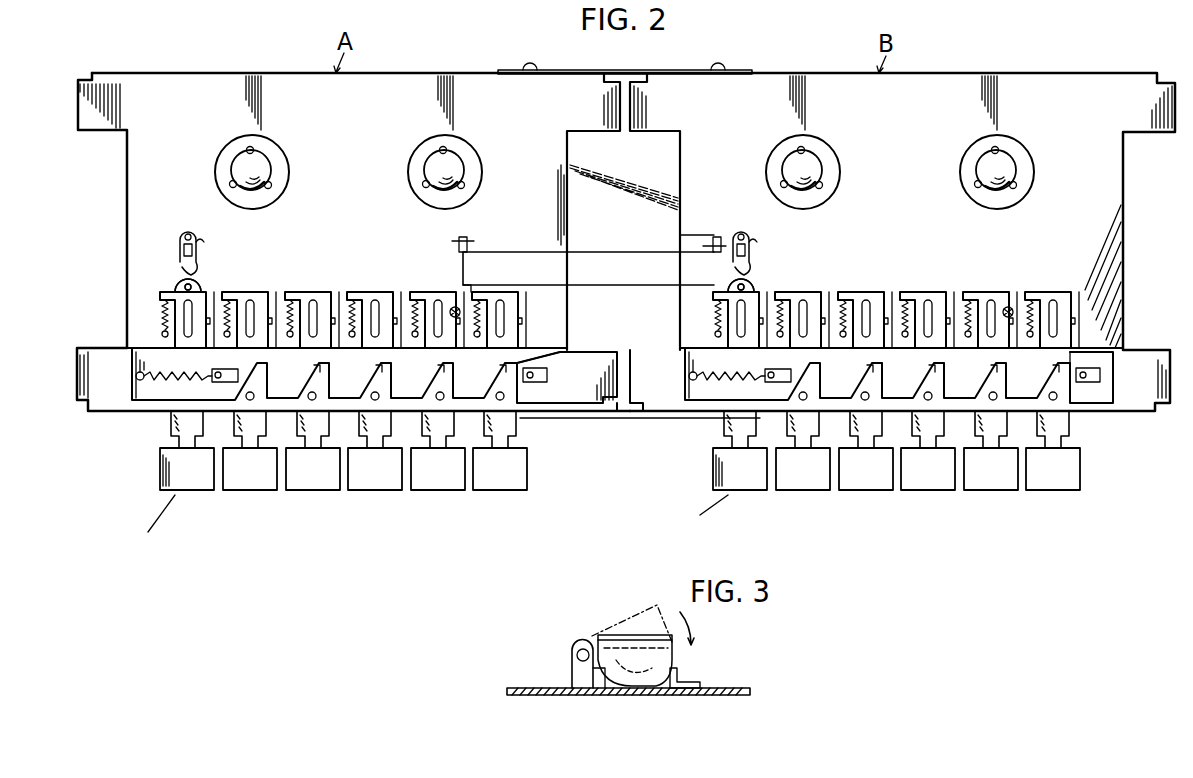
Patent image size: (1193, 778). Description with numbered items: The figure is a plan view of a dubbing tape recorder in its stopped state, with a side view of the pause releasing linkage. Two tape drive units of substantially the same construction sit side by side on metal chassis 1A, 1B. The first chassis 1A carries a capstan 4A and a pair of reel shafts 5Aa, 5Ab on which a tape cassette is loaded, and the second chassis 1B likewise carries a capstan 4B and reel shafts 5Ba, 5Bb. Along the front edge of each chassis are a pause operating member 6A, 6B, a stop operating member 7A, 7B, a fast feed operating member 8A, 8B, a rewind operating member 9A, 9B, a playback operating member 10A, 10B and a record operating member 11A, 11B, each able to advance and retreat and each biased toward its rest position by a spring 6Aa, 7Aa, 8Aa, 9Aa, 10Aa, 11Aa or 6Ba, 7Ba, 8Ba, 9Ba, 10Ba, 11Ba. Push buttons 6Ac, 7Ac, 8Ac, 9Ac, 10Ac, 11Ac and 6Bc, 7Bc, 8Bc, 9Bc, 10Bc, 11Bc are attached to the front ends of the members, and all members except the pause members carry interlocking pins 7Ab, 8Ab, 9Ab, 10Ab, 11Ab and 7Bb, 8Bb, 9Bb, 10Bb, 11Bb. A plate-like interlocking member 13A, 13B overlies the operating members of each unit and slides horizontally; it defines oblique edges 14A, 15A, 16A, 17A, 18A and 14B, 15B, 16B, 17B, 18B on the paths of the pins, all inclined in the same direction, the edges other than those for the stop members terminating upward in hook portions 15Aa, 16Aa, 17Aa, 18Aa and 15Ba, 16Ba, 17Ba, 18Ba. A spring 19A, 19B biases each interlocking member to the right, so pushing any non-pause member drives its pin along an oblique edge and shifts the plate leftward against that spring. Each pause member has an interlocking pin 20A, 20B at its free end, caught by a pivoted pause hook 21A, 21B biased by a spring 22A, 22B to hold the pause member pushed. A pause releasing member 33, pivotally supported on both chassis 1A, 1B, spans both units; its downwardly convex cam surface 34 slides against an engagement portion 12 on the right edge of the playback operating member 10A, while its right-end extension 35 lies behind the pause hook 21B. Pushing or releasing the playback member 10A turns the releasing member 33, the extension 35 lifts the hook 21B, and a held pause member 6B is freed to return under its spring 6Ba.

In FIG. 2, the chassis 1A is at (127, 188).
In FIG. 3, the chassis 1A is at (545, 688).
In FIG. 2, the chassis 1B is at (1123, 216).
In FIG. 2, the capstan 4A is at (458, 307).
In FIG. 2, the capstan 4B is at (1009, 307).
In FIG. 2, the reel shaft 5Aa is at (461, 162).
In FIG. 2, the reel shaft 5Ab is at (268, 162).
In FIG. 2, the reel shaft 5Ba is at (1012, 162).
In FIG. 2, the reel shaft 5Bb is at (820, 162).
In FIG. 2, the pause operating member 6A is at (165, 409).
In FIG. 2, the spring 6Aa is at (165, 302).
In FIG. 2, the push button 6Ac is at (187, 492).
In FIG. 2, the pause operating member 6B is at (715, 415).
In FIG. 2, the spring 6Ba is at (718, 302).
In FIG. 2, the push button 6Bc is at (740, 492).
In FIG. 2, the stop operating member 7A is at (272, 429).
In FIG. 2, the spring 7Aa is at (227, 302).
In FIG. 2, the interlocking pin 7Ab is at (268, 412).
In FIG. 2, the push button 7Ac is at (250, 492).
In FIG. 2, the stop operating member 7B is at (824, 431).
In FIG. 2, the spring 7Ba is at (780, 302).
In FIG. 2, the interlocking pin 7Bb is at (821, 412).
In FIG. 2, the push button 7Bc is at (803, 492).
In FIG. 2, the fast feed operating member 8A is at (337, 429).
In FIG. 2, the spring 8Aa is at (290, 302).
In FIG. 2, the interlocking pin 8Ab is at (331, 412).
In FIG. 2, the push button 8Ac is at (312, 492).
In FIG. 2, the fast feed operating member 8B is at (890, 431).
In FIG. 2, the spring 8Ba is at (843, 302).
In FIG. 2, the interlocking pin 8Bb is at (884, 412).
In FIG. 2, the push button 8Bc is at (866, 492).
In FIG. 2, the rewind operating member 9A is at (400, 429).
In FIG. 2, the spring 9Aa is at (352, 302).
In FIG. 2, the interlocking pin 9Ab is at (393, 412).
In FIG. 2, the push button 9Ac is at (375, 492).
In FIG. 2, the rewind operating member 9B is at (950, 431).
In FIG. 2, the spring 9Ba is at (905, 302).
In FIG. 2, the interlocking pin 9Bb is at (946, 412).
In FIG. 2, the push button 9Bc is at (928, 492).
In FIG. 2, the playback operating member 10A is at (475, 429).
In FIG. 2, the spring 10Aa is at (415, 302).
In FIG. 2, the interlocking pin 10Ab is at (456, 412).
In FIG. 2, the push button 10Ac is at (438, 492).
In FIG. 2, the playback operating member 10B is at (1021, 431).
In FIG. 2, the spring 10Ba is at (968, 302).
In FIG. 2, the interlocking pin 10Bb is at (1009, 412).
In FIG. 2, the push button 10Bc is at (991, 492).
In FIG. 2, the record operating member 11A is at (543, 410).
In FIG. 2, the spring 11Aa is at (481, 303).
In FIG. 2, the interlocking pin 11Ab is at (514, 414).
In FIG. 2, the push button 11Ac is at (518, 492).
In FIG. 2, the record operating member 11B is at (1088, 399).
In FIG. 2, the spring 11Ba is at (1031, 302).
In FIG. 2, the interlocking pin 11Bb is at (1068, 414).
In FIG. 2, the push button 11Bc is at (1060, 492).
In FIG. 2, the engagement portion 12 is at (459, 241).
In FIG. 3, the engagement portion 12 is at (700, 677).
In FIG. 2, the interlocking member 13A is at (334, 334).
In FIG. 2, the interlocking member 13B is at (909, 354).
In FIG. 2, the oblique edge 14A is at (254, 395).
In FIG. 2, the oblique edge 15A is at (316, 395).
In FIG. 2, the oblique edge 16A is at (379, 395).
In FIG. 2, the oblique edge 17A is at (444, 395).
In FIG. 2, the oblique edge 14B is at (807, 395).
In FIG. 2, the oblique edge 15B is at (869, 395).
In FIG. 2, the oblique edge 16B is at (932, 395).
In FIG. 2, the oblique edge 17B is at (997, 395).
In FIG. 2, the hook portion 15Aa is at (326, 362).
In FIG. 2, the hook portion 16Aa is at (388, 362).
In FIG. 2, the hook portion 17Aa is at (509, 361).
In FIG. 2, the hook portion 18Aa is at (562, 352).
In FIG. 2, the hook portion 15Ba is at (879, 362).
In FIG. 2, the hook portion 16Ba is at (941, 362).
In FIG. 2, the hook portion 17Ba is at (1040, 366).
In FIG. 2, the hook portion 18Ba is at (1072, 358).
In FIG. 2, the oblique edge 18A is at (548, 392).
In FIG. 2, the oblique edge 18B is at (1076, 400).
In FIG. 2, the spring 19A is at (150, 382).
In FIG. 2, the spring 19B is at (703, 382).
In FIG. 2, the interlocking pin 20A is at (182, 286).
In FIG. 2, the interlocking pin 20B is at (748, 286).
In FIG. 2, the pause hook 21A is at (187, 232).
In FIG. 2, the pause hook 21B is at (740, 232).
In FIG. 2, the spring 22A is at (206, 238).
In FIG. 2, the spring 22B is at (758, 240).
In FIG. 2, the pause releasing member 33 is at (567, 250).
In FIG. 3, the pause releasing member 33 is at (626, 636).
In FIG. 3, the cam surface 34 is at (672, 660).
In FIG. 2, the extension 35 is at (714, 246).